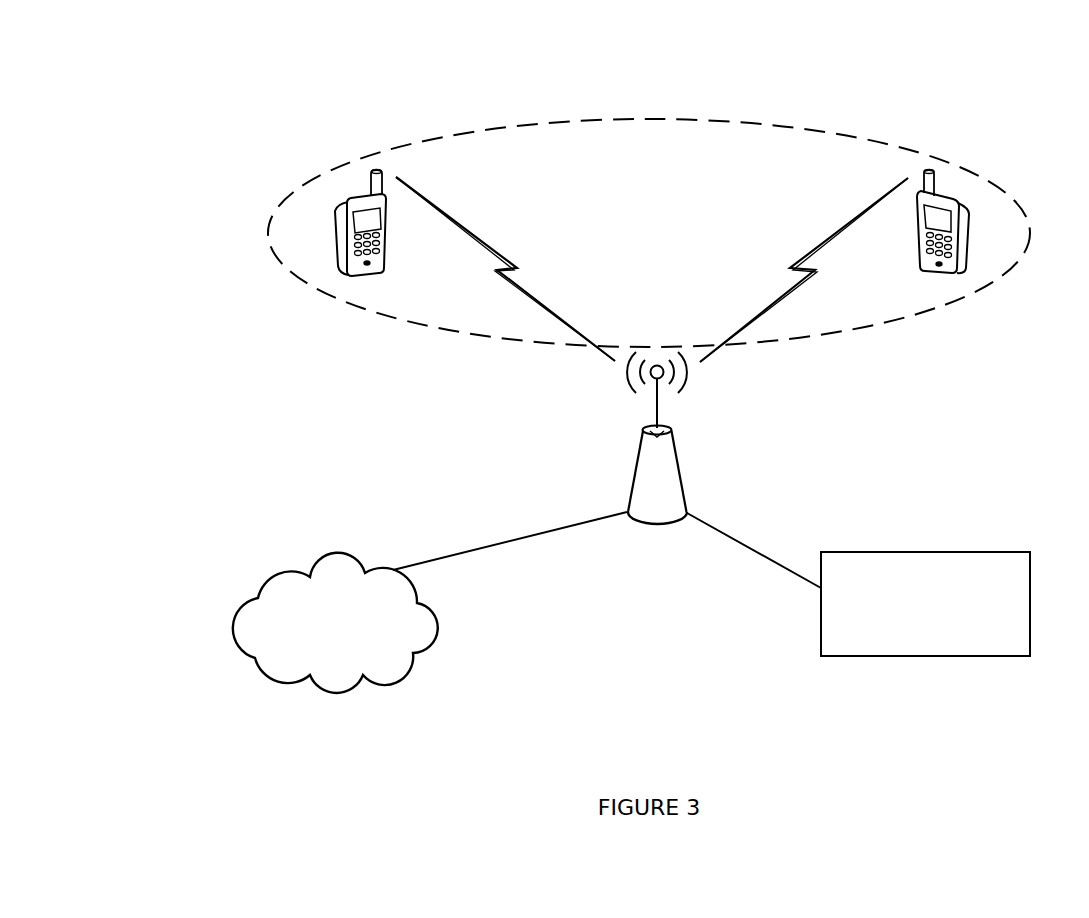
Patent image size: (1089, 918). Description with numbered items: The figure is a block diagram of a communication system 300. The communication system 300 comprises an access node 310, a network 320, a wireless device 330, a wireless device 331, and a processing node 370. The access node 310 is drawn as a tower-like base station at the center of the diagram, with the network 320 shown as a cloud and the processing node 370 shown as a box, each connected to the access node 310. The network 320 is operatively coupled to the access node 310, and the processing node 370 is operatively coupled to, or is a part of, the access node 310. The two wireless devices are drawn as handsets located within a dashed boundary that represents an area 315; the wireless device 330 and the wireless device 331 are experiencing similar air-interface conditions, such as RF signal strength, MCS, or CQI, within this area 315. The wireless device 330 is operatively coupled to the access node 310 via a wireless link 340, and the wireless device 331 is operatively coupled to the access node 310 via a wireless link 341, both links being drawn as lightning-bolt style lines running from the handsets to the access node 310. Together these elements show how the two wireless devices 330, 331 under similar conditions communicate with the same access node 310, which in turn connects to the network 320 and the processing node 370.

The communication system 300 is at (128, 56).
The access node 310 is at (662, 524).
The area 315 is at (835, 329).
The network 320 is at (335, 623).
The wireless device 330 is at (346, 275).
The wireless device 331 is at (958, 274).
The wireless link 340 is at (500, 271).
The wireless link 341 is at (812, 270).
The processing node 370 is at (925, 604).